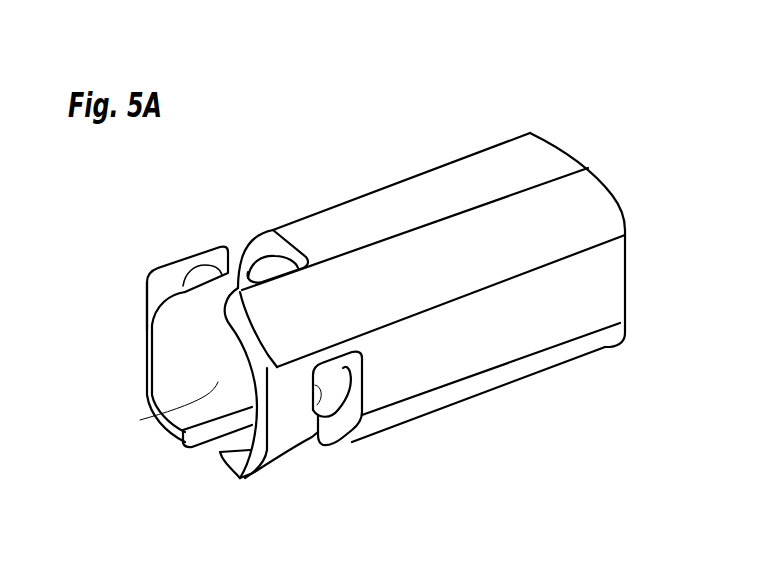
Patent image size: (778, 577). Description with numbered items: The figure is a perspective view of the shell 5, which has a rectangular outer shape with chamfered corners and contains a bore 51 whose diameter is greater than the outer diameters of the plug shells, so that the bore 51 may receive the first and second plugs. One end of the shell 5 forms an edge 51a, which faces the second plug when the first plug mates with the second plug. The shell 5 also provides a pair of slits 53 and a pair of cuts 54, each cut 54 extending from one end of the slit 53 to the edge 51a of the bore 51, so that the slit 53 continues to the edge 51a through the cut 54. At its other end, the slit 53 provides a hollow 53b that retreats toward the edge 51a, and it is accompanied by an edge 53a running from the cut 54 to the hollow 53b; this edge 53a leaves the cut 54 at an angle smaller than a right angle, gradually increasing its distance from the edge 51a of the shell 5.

The shell 5 is at (432, 125).
The bore 51 is at (140, 420).
The edge 51a is at (235, 478).
The slit 53 is at (245, 265).
The edge 53a is at (222, 283).
The hollow 53b is at (200, 328).
The cut 54 is at (200, 280).